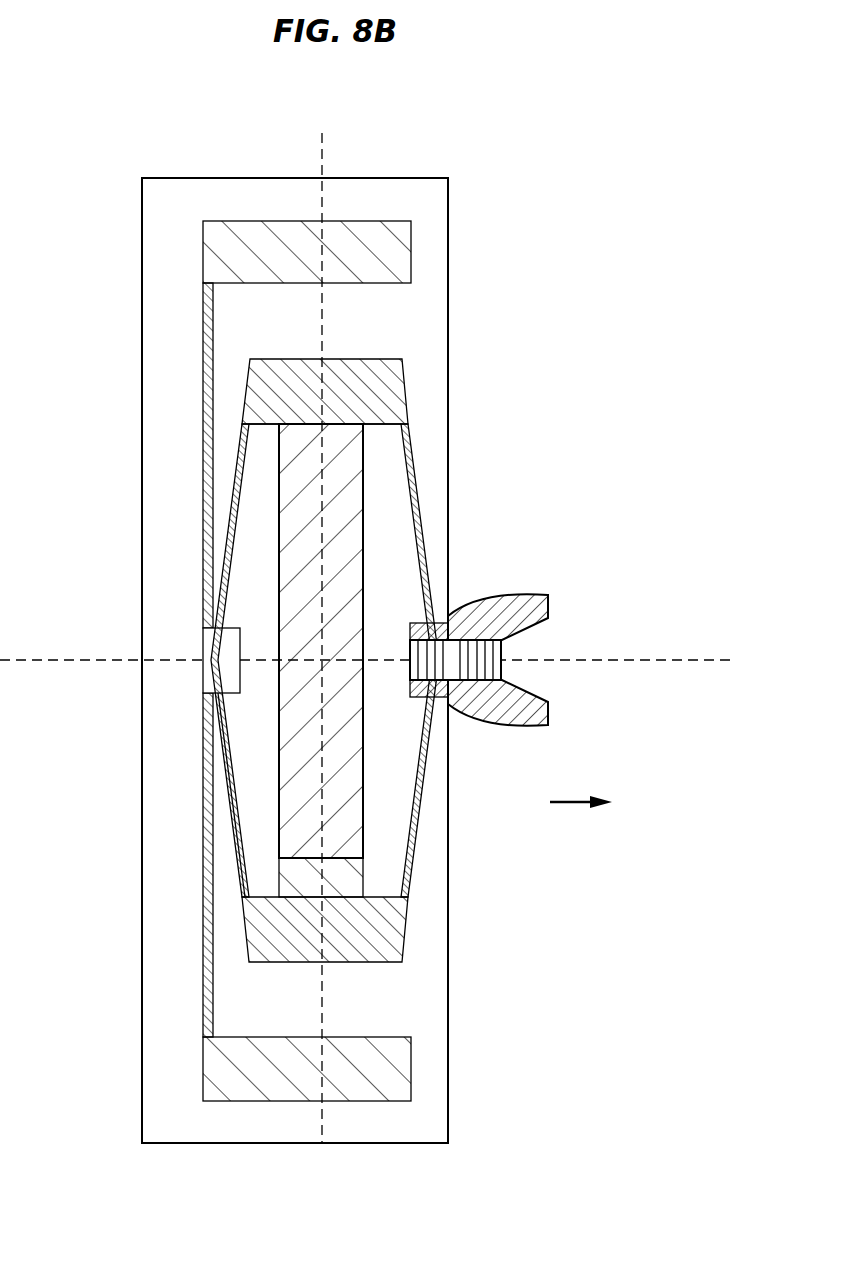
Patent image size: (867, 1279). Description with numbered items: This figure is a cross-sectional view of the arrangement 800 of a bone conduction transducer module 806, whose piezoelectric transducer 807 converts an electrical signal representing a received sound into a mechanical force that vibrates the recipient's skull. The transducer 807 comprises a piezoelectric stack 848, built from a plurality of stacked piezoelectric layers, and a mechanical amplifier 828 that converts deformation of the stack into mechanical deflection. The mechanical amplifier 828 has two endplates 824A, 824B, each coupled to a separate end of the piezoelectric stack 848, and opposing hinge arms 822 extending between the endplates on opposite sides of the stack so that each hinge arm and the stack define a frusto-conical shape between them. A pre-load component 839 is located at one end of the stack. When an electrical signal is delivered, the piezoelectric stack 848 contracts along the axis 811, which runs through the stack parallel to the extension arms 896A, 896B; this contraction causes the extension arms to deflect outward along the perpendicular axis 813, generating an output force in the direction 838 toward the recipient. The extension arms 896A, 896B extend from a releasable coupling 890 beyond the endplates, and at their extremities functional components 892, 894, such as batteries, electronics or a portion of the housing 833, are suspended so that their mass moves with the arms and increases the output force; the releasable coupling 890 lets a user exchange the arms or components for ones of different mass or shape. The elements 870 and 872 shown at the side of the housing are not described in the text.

The oscillating-blade assembly 800 is at (112, 152).
The transducer module 806 is at (142, 262).
The piezoelectric transducer 807 is at (245, 432).
The axis 811 is at (322, 160).
The axis 813 is at (667, 660).
The hinge arm 822 is at (240, 866).
The endplate 824A is at (392, 357).
The endplate 824B is at (375, 963).
The mechanical amplifier 828 is at (408, 420).
The housing 833 is at (272, 1143).
The direction of the recipient's skull 838 is at (575, 804).
The pre-load component 839 is at (363, 877).
The piezoelectric stack 848 is at (363, 490).
The horn 870 is at (530, 597).
The threaded coupler 872 is at (470, 640).
The releasable coupling 890 is at (220, 655).
The functional component 892 is at (411, 258).
The functional component 894 is at (411, 1076).
The extension arm 896A is at (203, 320).
The extension arm 896B is at (203, 770).